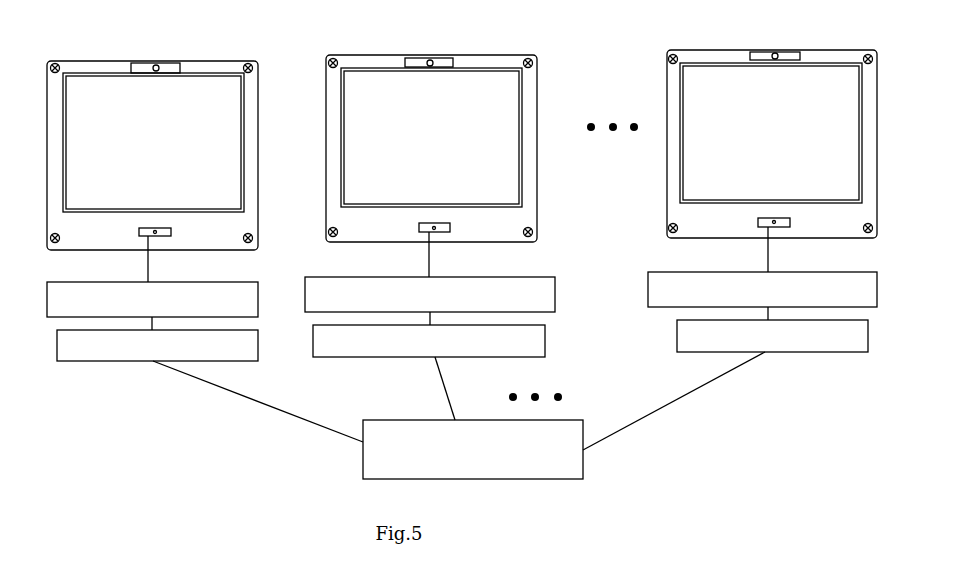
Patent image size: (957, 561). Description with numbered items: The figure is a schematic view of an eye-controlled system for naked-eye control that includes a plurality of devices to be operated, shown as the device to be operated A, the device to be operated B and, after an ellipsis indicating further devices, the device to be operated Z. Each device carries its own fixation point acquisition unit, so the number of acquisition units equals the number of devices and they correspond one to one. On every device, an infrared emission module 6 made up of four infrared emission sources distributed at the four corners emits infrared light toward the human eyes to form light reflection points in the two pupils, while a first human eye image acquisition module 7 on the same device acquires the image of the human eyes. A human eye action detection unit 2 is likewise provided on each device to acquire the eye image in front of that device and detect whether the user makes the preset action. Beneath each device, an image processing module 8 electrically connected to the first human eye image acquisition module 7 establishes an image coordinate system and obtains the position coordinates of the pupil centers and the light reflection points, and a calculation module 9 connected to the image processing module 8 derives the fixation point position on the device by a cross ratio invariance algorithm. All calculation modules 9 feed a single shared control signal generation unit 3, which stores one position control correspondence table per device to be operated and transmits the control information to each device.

The human eye action detection unit 2 is at (169, 67).
The control signal generation unit 3 is at (428, 420).
The infrared emission module 6 is at (253, 64).
The first human eye image acquisition module 7 is at (167, 235).
The image processing module 8 is at (87, 282).
The calculation module 9 is at (87, 330).
The device to be operated A is at (228, 164).
The device to be operated B is at (503, 166).
The device to be operated Z is at (693, 182).